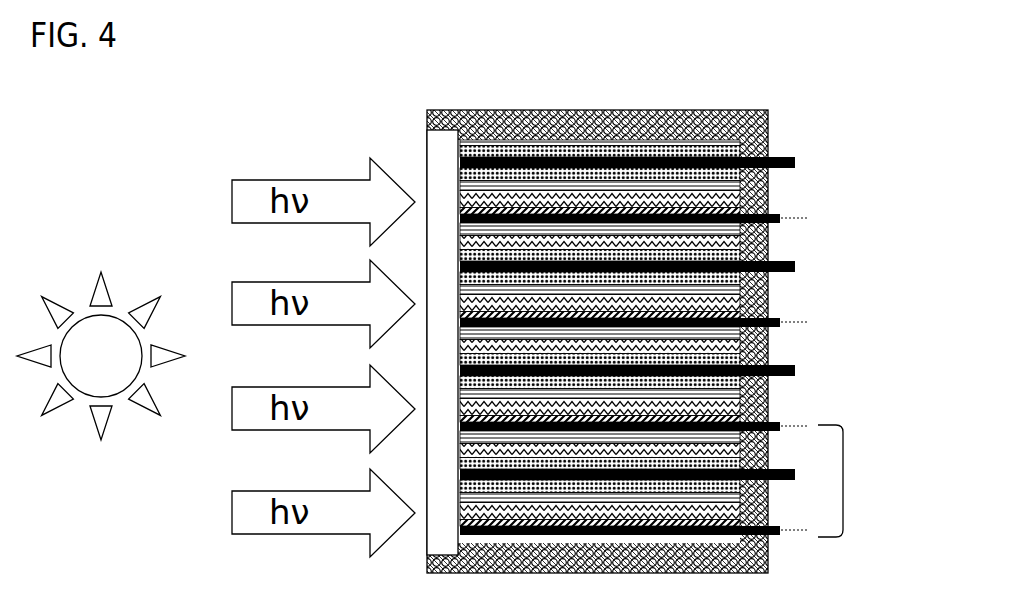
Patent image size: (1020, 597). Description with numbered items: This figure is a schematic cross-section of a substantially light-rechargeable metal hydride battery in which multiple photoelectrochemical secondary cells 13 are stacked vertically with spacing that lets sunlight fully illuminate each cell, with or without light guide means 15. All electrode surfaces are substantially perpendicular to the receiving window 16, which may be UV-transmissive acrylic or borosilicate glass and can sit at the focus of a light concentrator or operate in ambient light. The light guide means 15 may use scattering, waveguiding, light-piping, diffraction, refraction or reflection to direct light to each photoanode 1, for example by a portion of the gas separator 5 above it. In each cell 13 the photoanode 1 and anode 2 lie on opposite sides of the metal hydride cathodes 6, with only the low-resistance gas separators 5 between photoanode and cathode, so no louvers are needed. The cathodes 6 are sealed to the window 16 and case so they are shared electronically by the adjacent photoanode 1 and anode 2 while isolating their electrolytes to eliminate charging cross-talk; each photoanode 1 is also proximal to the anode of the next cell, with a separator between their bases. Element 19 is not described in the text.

The photoanode 1 is at (742, 305).
The anode 2 is at (748, 343).
The gas separator 5 is at (745, 187).
The metal hydride cathode 6 is at (782, 152).
The photoelectrochemical secondary cell 13 is at (847, 483).
The light guide means 15 is at (457, 198).
The receiving window 16 is at (438, 157).
The thin electrode lead 19 is at (654, 370).